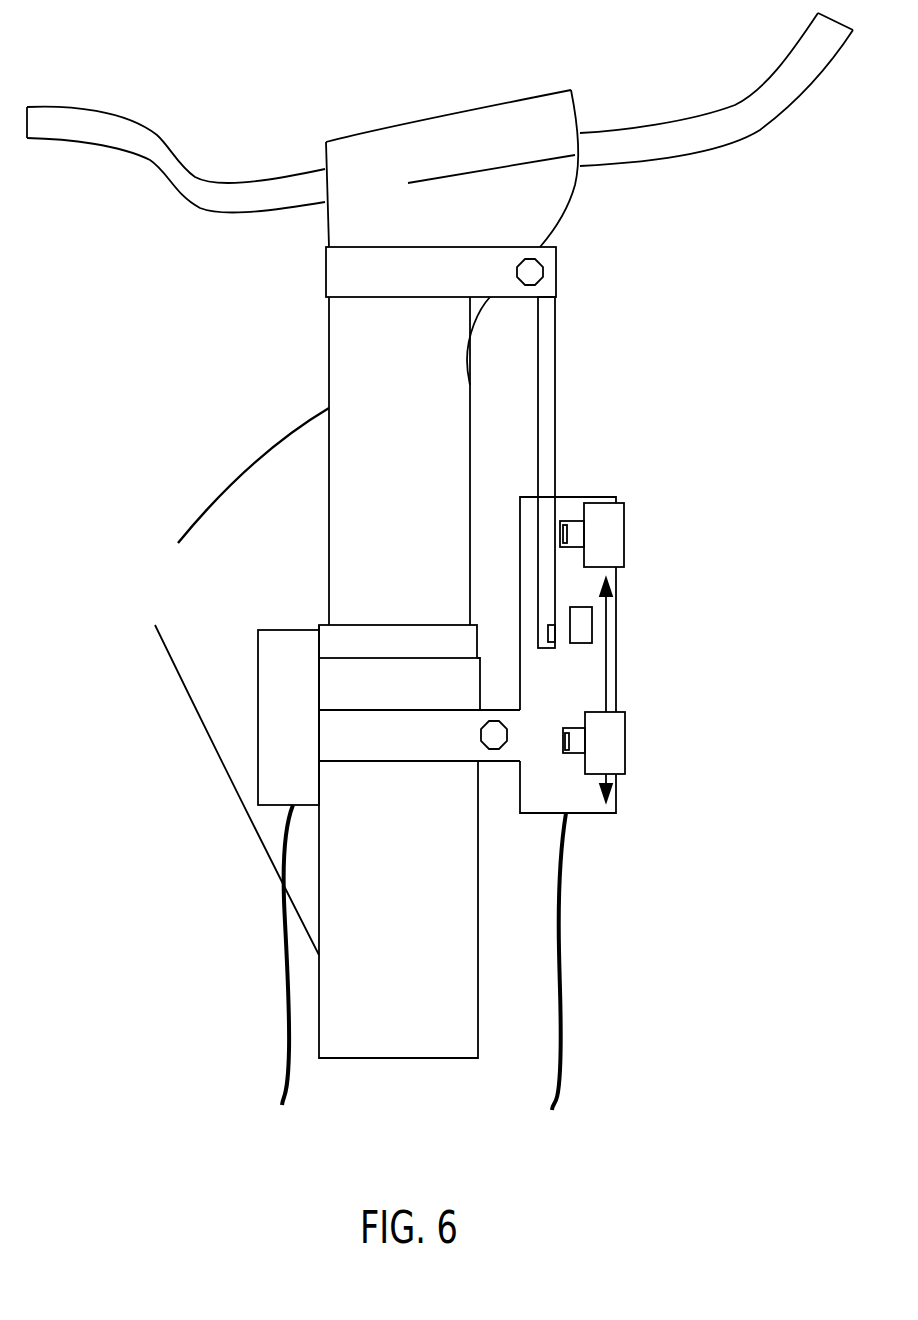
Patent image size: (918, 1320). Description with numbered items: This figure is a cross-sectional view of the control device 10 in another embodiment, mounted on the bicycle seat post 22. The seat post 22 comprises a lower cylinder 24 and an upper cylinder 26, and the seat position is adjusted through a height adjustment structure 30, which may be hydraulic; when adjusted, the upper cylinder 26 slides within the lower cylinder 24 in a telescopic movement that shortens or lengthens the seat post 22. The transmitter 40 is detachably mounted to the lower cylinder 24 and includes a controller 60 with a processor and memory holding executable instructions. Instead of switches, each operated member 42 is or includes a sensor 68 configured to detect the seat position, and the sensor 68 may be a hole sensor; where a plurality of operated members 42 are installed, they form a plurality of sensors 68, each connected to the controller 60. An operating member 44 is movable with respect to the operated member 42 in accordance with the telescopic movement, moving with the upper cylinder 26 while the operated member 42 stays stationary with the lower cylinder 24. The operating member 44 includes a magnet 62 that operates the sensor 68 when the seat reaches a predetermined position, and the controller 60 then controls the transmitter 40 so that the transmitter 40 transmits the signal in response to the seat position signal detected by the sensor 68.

The control device 10 is at (689, 557).
The bicycle seat post 22 is at (217, 681).
The lower cylinder 24 is at (228, 774).
The upper cylinder 26 is at (241, 490).
The height adjustment structure 30 is at (285, 630).
The transmitter 40 is at (630, 637).
The operated member 42 is at (639, 537).
The operating member 44 is at (556, 367).
The controller 60 is at (580, 607).
The magnet 62 is at (555, 633).
The sensor 68 is at (570, 521).